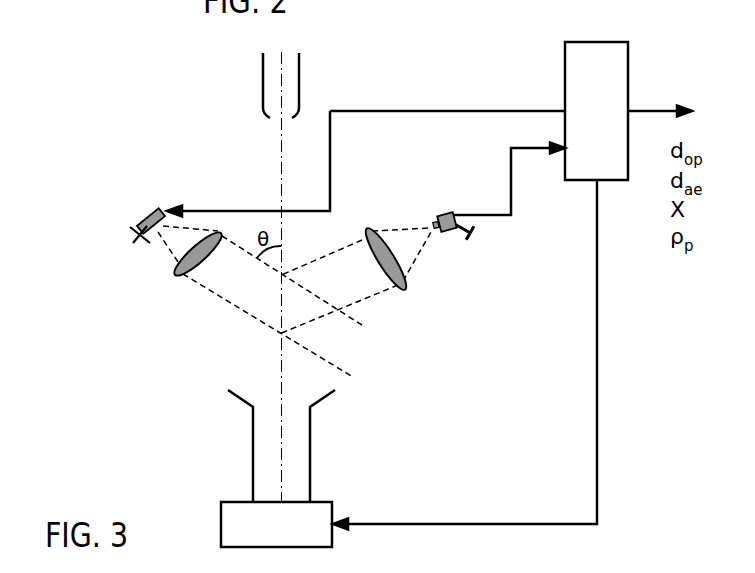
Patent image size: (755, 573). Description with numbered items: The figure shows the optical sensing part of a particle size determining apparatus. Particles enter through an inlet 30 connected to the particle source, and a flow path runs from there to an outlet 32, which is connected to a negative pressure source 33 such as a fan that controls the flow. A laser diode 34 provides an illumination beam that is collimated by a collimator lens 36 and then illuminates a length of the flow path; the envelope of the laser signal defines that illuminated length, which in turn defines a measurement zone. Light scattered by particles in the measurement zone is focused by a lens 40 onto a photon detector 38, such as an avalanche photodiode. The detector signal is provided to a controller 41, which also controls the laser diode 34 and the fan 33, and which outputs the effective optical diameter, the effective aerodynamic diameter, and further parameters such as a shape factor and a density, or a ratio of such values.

The inlet 30 is at (299, 72).
The outlet 32 is at (250, 438).
The negative pressure source 33 is at (221, 520).
The laser diode 34 is at (157, 212).
The collimator lens 36 is at (174, 279).
The photon detector 38 is at (445, 212).
The lens 40 is at (375, 228).
The controller 41 is at (588, 41).